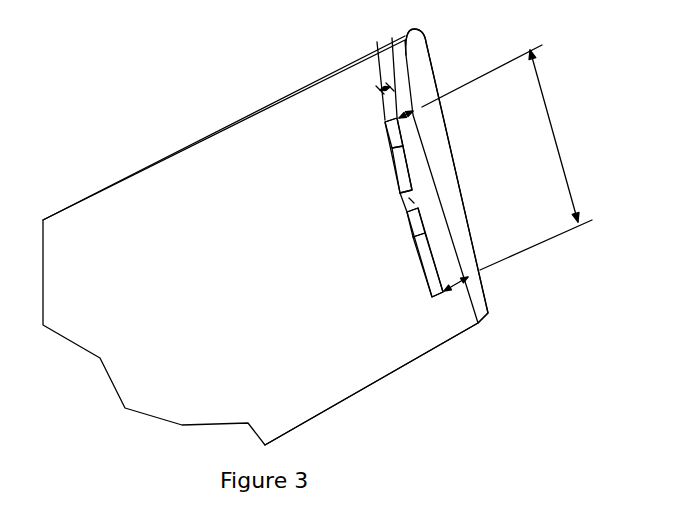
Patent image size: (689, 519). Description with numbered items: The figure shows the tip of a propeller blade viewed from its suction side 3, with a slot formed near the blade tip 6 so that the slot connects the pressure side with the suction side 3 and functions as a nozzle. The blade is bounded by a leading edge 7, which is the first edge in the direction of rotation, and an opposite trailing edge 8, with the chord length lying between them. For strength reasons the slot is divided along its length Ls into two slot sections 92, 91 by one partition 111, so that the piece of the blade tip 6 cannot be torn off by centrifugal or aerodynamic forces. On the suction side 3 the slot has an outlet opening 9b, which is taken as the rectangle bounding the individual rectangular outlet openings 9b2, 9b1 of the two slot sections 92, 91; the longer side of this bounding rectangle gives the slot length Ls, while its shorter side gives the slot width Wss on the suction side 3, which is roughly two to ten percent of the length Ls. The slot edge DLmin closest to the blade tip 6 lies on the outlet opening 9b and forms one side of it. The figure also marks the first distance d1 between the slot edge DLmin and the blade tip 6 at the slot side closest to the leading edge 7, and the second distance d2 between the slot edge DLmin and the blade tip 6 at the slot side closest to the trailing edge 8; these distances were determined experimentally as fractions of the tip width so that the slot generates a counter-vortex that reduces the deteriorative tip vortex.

The suction side 3 is at (163, 249).
The leading edge 7 is at (185, 147).
The trailing edge 8 is at (348, 400).
The blade tip 6 is at (435, 138).
The slot section 92 is at (309, 139).
The slot section 91 is at (435, 298).
The outlet opening 9b is at (397, 162).
The outlet opening 9b1 is at (427, 275).
The outlet opening 9b2 is at (390, 140).
The partition 111 is at (405, 205).
The slot edge closest to the blade tip DLmin is at (414, 200).
The slot width on the suction side Wss is at (368, 66).
The first distance d1 is at (408, 110).
The second distance d2 is at (462, 292).
The slot length Ls is at (507, 157).